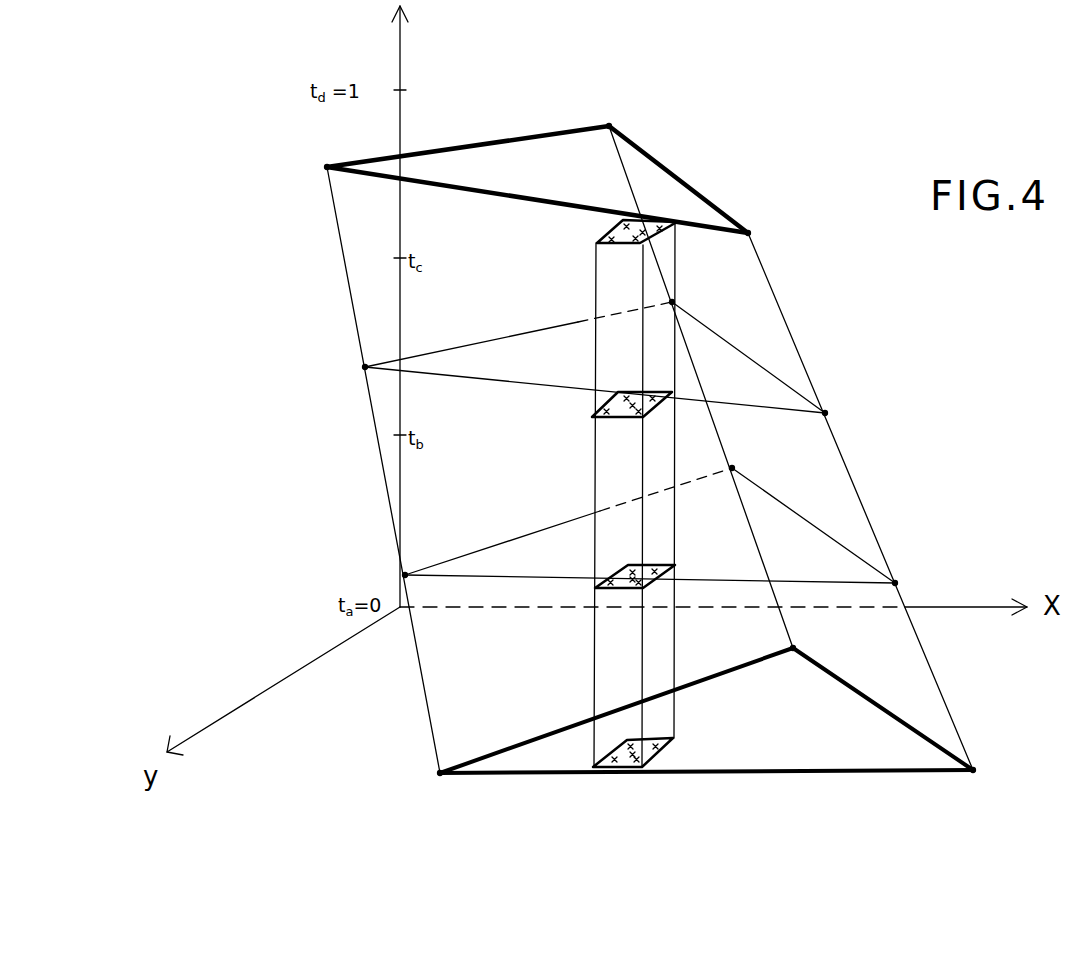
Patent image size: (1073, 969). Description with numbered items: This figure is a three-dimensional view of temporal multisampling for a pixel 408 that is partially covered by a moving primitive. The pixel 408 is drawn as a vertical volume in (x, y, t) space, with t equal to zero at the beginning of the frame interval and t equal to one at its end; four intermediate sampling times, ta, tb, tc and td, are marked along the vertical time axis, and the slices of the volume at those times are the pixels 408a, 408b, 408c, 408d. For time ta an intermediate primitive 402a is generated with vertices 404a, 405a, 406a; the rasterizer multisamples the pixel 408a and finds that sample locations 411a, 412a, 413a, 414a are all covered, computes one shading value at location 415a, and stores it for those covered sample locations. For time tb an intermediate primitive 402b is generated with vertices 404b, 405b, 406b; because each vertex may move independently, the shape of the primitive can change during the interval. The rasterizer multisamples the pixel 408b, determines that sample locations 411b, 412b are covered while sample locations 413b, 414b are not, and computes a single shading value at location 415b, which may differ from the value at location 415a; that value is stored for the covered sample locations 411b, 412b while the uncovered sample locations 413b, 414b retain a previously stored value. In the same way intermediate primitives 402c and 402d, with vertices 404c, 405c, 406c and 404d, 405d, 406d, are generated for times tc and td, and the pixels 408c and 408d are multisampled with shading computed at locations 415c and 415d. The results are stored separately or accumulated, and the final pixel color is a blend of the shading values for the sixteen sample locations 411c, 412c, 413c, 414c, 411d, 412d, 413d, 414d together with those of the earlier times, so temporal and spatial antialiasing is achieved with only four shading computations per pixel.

The intermediate primitive 402a is at (512, 755).
The intermediate primitive 402b is at (481, 558).
The intermediate primitive 402c is at (455, 347).
The intermediate primitive 402d is at (522, 150).
The vertex 404a is at (440, 773).
The vertex 404b is at (405, 575).
The vertex 404c is at (365, 367).
The vertex 404d is at (327, 167).
The vertex 405a is at (973, 770).
The vertex 405b is at (895, 583).
The vertex 405c is at (825, 413).
The vertex 405d is at (748, 233).
The vertex 406a is at (793, 648).
The vertex 406b is at (732, 468).
The vertex 406c is at (672, 302).
The vertex 406d is at (609, 126).
The pixel 408 is at (596, 279).
The pixel 408a is at (680, 752).
The pixel 408b is at (655, 572).
The pixel 408c is at (656, 398).
The pixel 408d is at (675, 240).
The sample location 411a is at (618, 740).
The sample location 411b is at (630, 566).
The sample location 411c is at (626, 393).
The sample location 411d is at (626, 218).
The sample location 412a is at (674, 740).
The sample location 412b is at (658, 575).
The sample location 412c is at (657, 410).
The sample location 412d is at (670, 226).
The sample location 413a is at (594, 765).
The sample location 413b is at (596, 587).
The sample location 413c is at (594, 416).
The sample location 413d is at (607, 240).
The sample location 414a is at (650, 758).
The sample location 414b is at (645, 588).
The sample location 414c is at (636, 418).
The sample location 414d is at (635, 246).
The shading location 415a is at (628, 762).
The shading location 415b is at (630, 586).
The shading location 415c is at (615, 408).
The shading location 415d is at (644, 228).